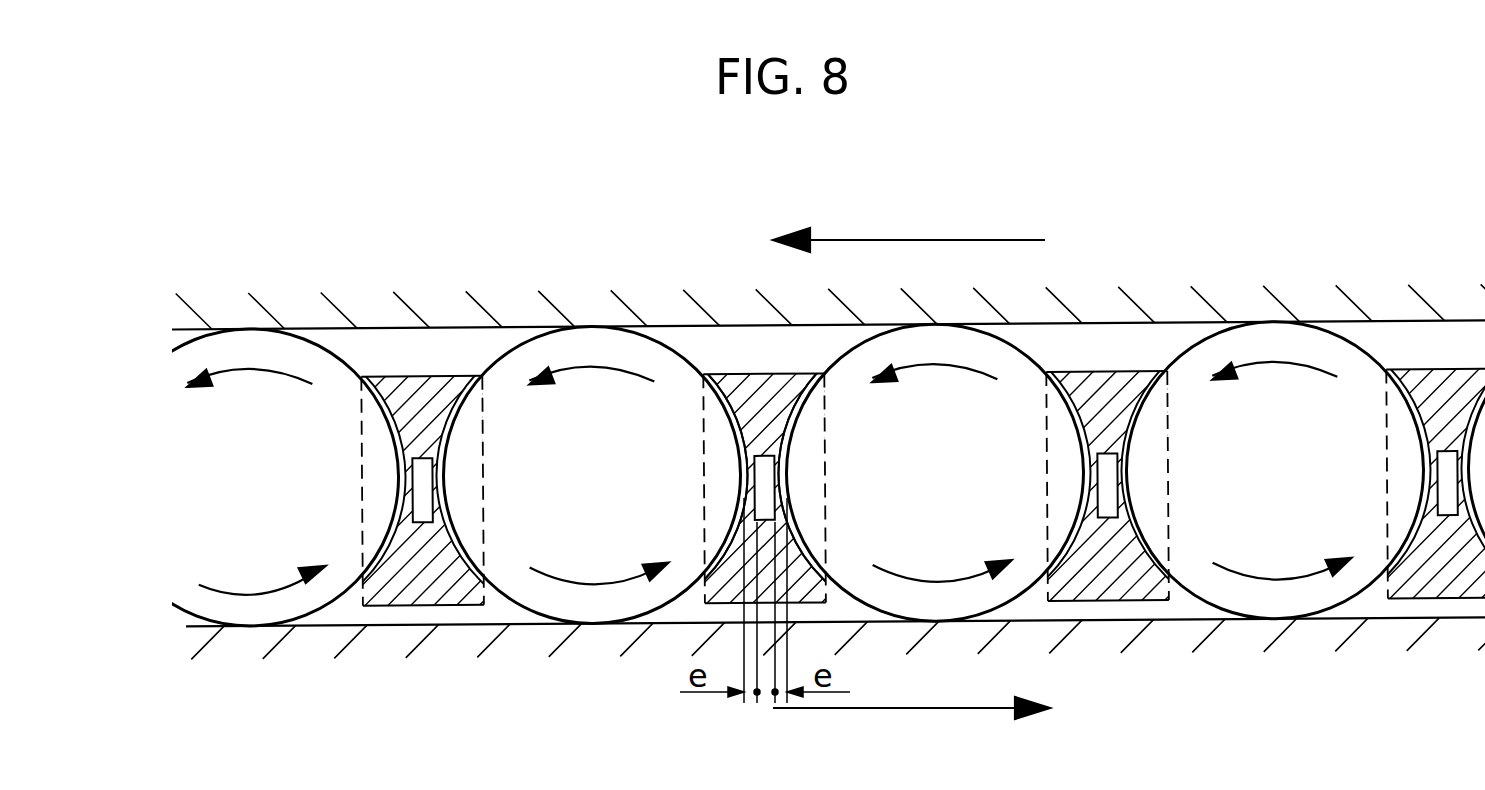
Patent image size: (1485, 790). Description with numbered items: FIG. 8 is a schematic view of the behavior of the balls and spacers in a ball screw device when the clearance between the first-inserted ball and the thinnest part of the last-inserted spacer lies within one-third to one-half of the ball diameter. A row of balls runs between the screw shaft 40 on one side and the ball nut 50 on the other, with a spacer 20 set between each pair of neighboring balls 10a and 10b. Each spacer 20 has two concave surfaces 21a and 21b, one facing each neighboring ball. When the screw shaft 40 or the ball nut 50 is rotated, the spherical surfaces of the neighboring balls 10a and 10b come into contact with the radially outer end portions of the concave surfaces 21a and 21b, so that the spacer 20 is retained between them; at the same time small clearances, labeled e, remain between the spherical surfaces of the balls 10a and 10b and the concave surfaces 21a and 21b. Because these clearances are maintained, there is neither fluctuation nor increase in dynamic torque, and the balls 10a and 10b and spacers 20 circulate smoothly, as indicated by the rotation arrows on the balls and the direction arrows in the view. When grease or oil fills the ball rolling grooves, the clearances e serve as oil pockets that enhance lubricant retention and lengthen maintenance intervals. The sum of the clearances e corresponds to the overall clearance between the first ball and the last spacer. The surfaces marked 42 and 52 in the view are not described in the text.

The ball 10a is at (597, 338).
The ball 10b is at (968, 348).
The spacer 20 is at (752, 380).
The concave surface 21a is at (730, 572).
The concave surface 21b is at (797, 562).
The screw shaft 40 is at (1240, 632).
The lower raceway surface 42 is at (1392, 603).
The ball nut 50 is at (1318, 283).
The upper raceway surface 52 is at (1364, 318).